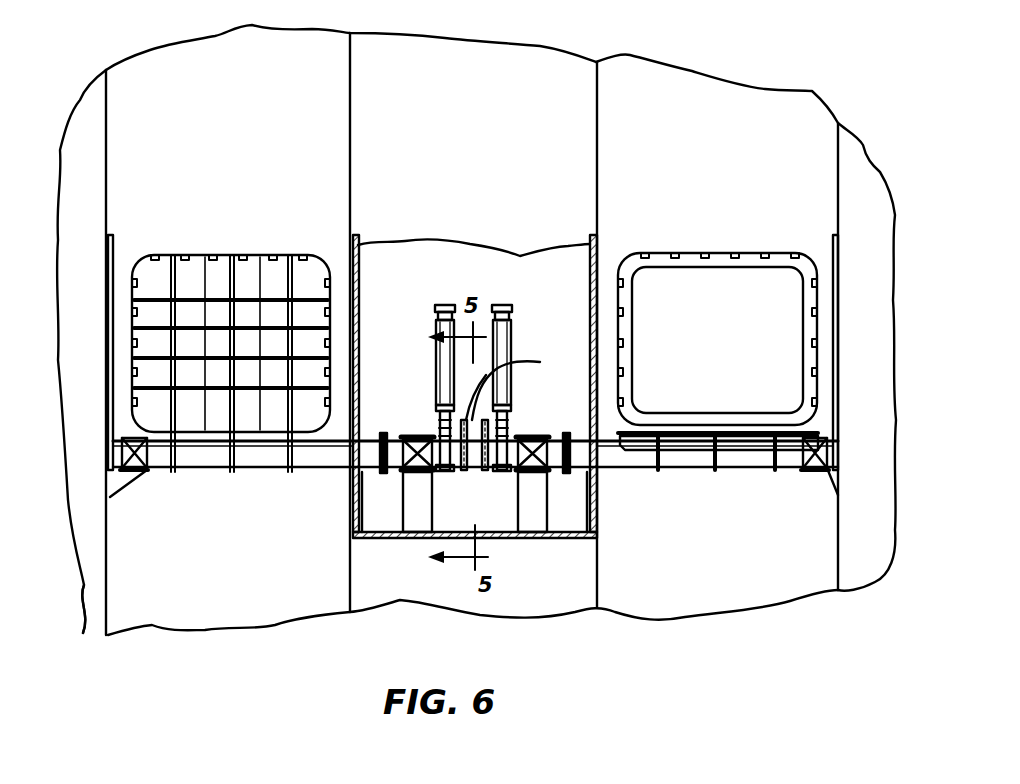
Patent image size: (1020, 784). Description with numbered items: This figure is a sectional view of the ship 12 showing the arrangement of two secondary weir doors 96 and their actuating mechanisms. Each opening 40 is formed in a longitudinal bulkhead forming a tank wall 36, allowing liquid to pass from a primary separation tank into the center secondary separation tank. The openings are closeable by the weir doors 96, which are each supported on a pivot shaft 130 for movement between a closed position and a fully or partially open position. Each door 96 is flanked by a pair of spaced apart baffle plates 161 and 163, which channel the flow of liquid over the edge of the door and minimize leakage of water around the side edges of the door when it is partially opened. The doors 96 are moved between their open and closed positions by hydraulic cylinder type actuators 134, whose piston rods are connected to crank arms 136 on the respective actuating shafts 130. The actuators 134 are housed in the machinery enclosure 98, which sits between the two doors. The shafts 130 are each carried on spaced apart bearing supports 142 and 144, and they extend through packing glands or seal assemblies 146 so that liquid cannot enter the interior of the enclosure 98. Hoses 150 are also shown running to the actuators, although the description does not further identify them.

The ship 12 is at (808, 80).
The longitudinal bulkhead 36 is at (79, 625).
The internal opening 40 is at (696, 262).
The weir door 96 is at (242, 258).
The machinery enclosure 98 is at (597, 163).
The pivot shaft 130 is at (202, 468).
The hydraulic cylinder type actuator 134 is at (436, 342).
The crank arm 136 is at (474, 470).
The bearing support 142 is at (147, 468).
The bearing support 144 is at (405, 440).
The packing gland or seal assembly 146 is at (352, 452).
The hoses 150 is at (540, 362).
The baffle plate 161 is at (112, 240).
The baffle plate 163 is at (352, 240).